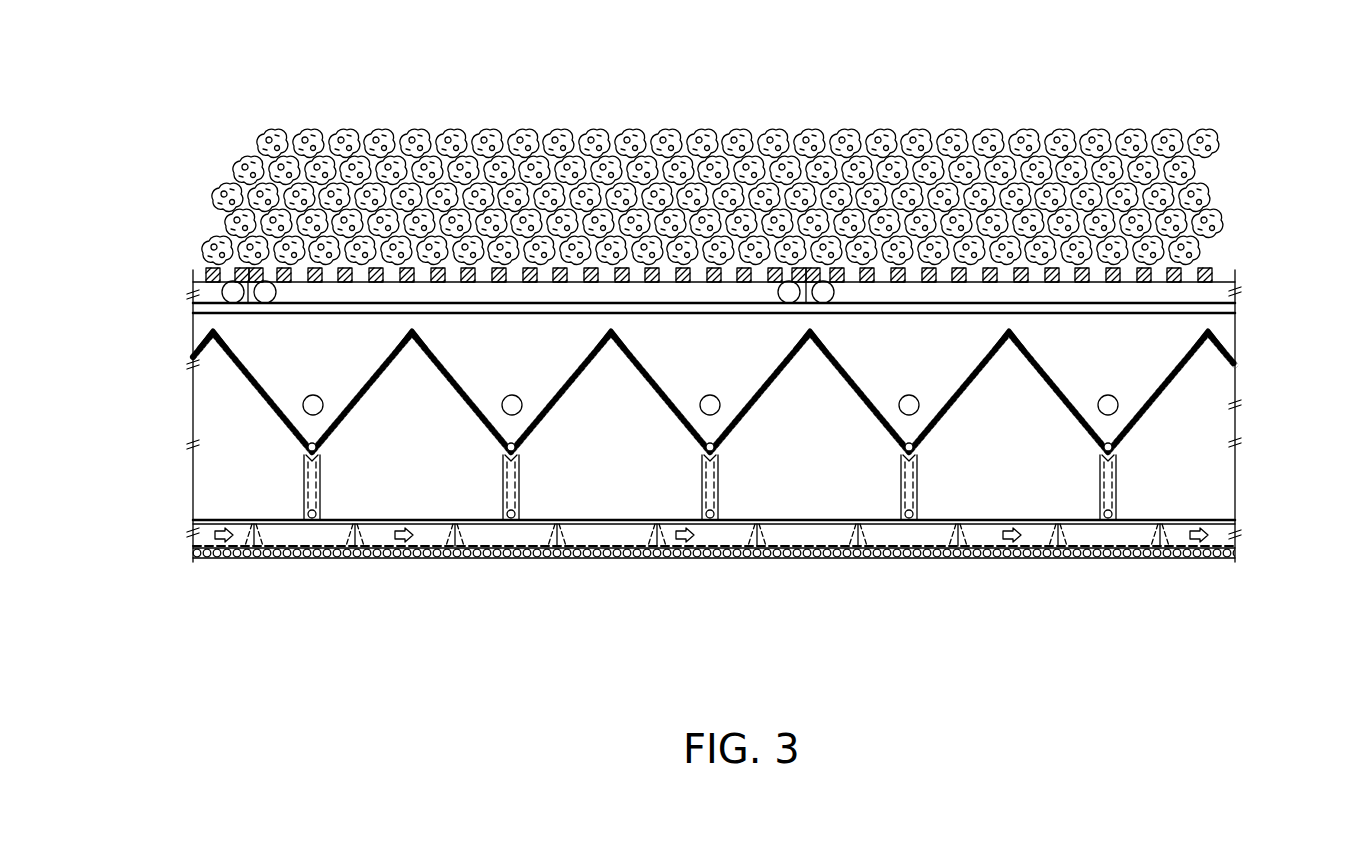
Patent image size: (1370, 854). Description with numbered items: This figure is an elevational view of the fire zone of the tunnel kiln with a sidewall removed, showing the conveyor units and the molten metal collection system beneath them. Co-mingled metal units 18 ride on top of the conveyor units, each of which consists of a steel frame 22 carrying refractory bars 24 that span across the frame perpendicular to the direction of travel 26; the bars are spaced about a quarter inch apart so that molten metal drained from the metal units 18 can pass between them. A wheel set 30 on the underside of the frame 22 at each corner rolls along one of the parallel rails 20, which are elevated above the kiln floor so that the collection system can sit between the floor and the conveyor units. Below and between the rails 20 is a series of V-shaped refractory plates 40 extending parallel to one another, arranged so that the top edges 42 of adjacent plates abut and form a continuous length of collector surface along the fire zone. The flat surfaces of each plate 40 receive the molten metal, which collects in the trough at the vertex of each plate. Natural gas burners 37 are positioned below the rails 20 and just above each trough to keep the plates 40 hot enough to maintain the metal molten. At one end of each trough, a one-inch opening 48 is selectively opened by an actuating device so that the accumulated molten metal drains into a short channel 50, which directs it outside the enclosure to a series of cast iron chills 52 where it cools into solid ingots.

The co-mingled metal units 18 is at (883, 127).
The parallel rails 20 is at (1240, 303).
The steel frame 22 is at (462, 293).
The refractory bars 24 is at (205, 268).
The direction of travel 26 is at (407, 560).
The wheel set 30 is at (270, 303).
The natural gas burners 37 is at (323, 404).
The V-shaped refractory plates 40 is at (245, 390).
The top edges 42 is at (213, 331).
The opening 48 is at (305, 446).
The short channel 50 is at (520, 480).
The cast iron chills 52 is at (513, 545).